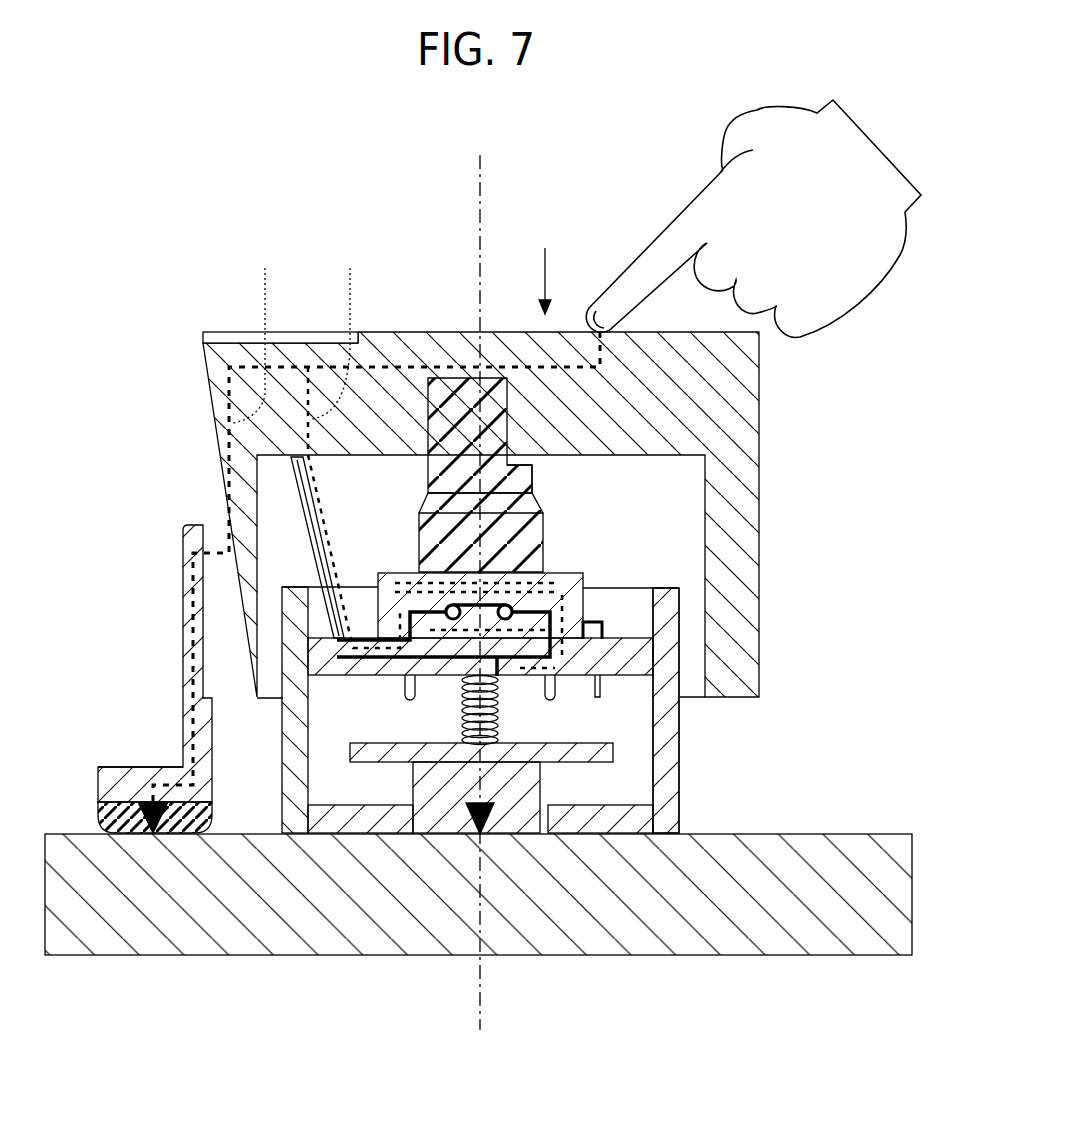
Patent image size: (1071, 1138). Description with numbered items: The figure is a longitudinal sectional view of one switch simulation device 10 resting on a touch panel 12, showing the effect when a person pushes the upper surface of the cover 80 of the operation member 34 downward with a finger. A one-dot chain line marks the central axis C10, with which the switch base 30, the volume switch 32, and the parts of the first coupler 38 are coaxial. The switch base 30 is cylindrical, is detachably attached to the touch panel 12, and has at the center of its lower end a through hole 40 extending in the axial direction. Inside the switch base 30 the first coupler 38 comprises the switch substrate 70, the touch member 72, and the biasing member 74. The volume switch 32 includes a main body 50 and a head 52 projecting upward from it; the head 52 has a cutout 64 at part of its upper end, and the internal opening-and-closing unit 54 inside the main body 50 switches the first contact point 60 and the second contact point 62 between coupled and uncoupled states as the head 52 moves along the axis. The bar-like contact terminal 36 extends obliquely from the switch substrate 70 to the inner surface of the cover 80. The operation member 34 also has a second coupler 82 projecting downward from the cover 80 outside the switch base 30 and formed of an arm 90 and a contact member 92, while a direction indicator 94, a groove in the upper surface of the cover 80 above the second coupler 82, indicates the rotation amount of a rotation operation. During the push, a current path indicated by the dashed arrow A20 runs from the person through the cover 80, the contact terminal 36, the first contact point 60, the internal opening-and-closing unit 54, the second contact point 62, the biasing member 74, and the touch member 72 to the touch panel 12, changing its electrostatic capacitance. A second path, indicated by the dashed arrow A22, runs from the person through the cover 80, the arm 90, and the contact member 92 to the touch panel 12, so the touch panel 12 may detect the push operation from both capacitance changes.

The switch simulation device 10 is at (179, 216).
The touch panel 12 is at (829, 833).
The switch base 30 is at (665, 753).
The volume switch 32 is at (545, 518).
The operation member 34 is at (230, 370).
The contact terminal 36 is at (307, 505).
The first coupler 38 is at (640, 700).
The through hole 40 is at (548, 808).
The main body 50 is at (563, 573).
The head 52 is at (533, 472).
The internal opening-and-closing unit 54 is at (470, 590).
The first contact point 60 is at (378, 594).
The second contact point 62 is at (585, 597).
The cutout 64 is at (505, 380).
The switch substrate 70 is at (623, 638).
The touch member 72 is at (540, 785).
The biasing member 74 is at (500, 712).
The cover 80 is at (222, 412).
The second coupler 82 is at (183, 703).
The arm 90 is at (183, 740).
The contact member 92 is at (100, 810).
The direction indicator 94 is at (220, 333).
The dashed arrow A20 is at (344, 328).
The dashed arrow A22 is at (266, 330).
The central axis C10 is at (486, 182).